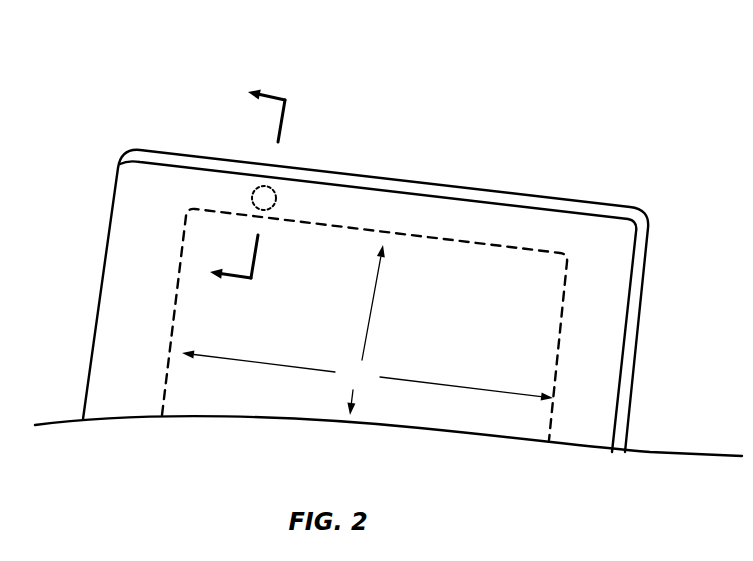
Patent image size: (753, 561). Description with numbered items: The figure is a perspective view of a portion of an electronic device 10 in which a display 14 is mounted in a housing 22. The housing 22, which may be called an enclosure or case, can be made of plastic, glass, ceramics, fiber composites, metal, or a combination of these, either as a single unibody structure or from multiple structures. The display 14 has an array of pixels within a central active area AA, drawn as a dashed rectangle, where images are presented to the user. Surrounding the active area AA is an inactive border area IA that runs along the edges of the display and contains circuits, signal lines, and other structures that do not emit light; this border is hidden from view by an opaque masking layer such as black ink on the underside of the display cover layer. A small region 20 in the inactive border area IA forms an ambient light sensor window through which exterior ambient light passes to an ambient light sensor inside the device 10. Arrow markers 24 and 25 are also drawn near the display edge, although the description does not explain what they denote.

The electronic device 10 is at (478, 100).
The display 14 is at (352, 242).
The region 20 is at (277, 194).
The housing 22 is at (627, 208).
The bracket indicating edge region 24 is at (280, 122).
The direction arrow 25 is at (278, 97).
The active area AA is at (367, 330).
The inactive border area IA is at (517, 214).